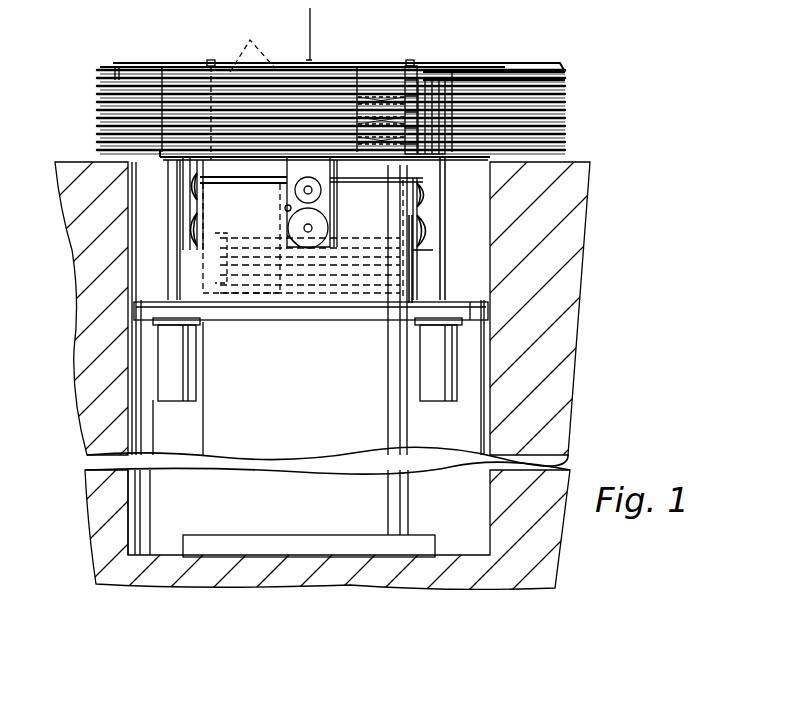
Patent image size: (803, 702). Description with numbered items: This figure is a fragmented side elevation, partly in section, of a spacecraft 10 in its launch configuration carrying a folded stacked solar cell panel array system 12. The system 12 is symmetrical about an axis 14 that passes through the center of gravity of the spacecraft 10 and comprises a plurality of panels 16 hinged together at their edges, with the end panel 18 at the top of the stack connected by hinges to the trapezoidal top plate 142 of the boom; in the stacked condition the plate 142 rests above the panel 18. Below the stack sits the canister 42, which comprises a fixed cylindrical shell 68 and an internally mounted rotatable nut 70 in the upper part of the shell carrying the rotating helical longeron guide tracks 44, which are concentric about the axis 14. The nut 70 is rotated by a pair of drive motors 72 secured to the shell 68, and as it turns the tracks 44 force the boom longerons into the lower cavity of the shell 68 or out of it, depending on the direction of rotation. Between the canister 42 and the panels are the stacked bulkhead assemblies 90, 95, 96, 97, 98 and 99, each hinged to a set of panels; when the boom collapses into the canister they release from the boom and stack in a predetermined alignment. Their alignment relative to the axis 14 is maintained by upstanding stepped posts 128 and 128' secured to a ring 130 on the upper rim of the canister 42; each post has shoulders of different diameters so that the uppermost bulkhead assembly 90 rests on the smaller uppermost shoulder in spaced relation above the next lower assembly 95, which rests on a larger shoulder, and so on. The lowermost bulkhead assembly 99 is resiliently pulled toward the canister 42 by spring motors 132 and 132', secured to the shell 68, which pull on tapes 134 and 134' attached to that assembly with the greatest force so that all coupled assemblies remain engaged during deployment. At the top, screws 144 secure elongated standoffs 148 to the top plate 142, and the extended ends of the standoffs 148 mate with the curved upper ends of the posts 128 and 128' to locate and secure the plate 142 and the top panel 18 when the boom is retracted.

The spacecraft 10 is at (106, 543).
The folded stacked solar cell panel array system 12 is at (93, 78).
The axis 14 is at (312, 30).
The panels 16 is at (587, 97).
The end panel 18 is at (540, 70).
The canister 42 is at (420, 476).
The helical longeron guide tracks 44 is at (361, 296).
The cylindrical shell 68 is at (208, 507).
The rotatable nut 70 is at (217, 300).
The drive motors 72 is at (180, 400).
The bulkhead assembly 90 is at (433, 103).
The bulkhead assembly 95 is at (437, 140).
The bulkhead assembly 96 is at (440, 152).
The bulkhead assembly 97 is at (367, 160).
The bulkhead assembly 98 is at (437, 200).
The lowermost bulkhead assembly 99 is at (165, 150).
The stepped post 128 is at (310, 261).
The stepped post 128' is at (376, 231).
The ring 130 is at (185, 162).
The spring motor 132 is at (449, 275).
The spring motor 132' is at (313, 270).
The tape 134 is at (448, 239).
The tape 134' is at (263, 233).
The top plate 142 is at (490, 64).
The screws 144 is at (211, 60).
The standoffs 148 is at (252, 38).